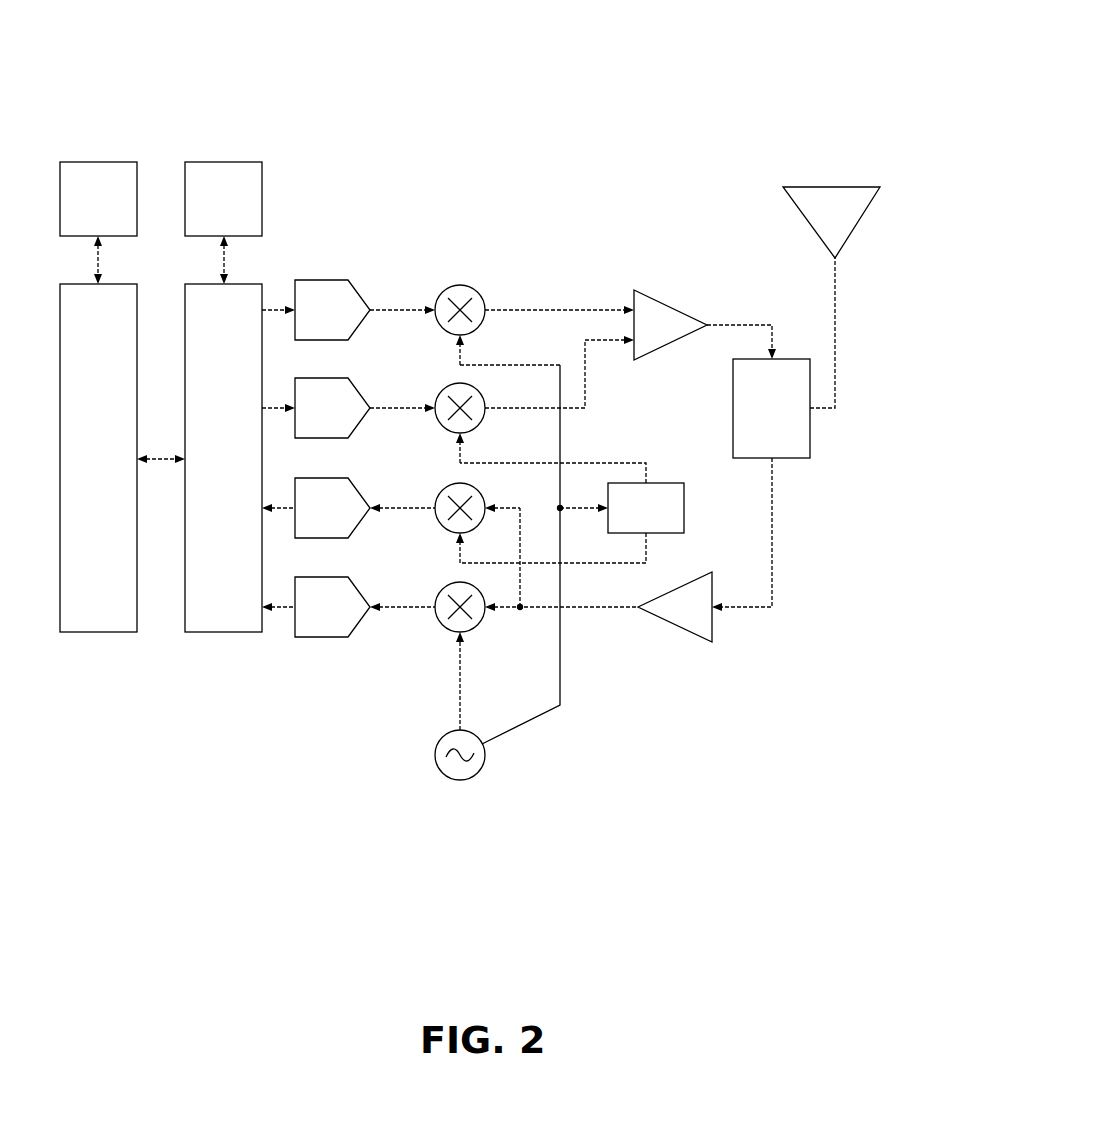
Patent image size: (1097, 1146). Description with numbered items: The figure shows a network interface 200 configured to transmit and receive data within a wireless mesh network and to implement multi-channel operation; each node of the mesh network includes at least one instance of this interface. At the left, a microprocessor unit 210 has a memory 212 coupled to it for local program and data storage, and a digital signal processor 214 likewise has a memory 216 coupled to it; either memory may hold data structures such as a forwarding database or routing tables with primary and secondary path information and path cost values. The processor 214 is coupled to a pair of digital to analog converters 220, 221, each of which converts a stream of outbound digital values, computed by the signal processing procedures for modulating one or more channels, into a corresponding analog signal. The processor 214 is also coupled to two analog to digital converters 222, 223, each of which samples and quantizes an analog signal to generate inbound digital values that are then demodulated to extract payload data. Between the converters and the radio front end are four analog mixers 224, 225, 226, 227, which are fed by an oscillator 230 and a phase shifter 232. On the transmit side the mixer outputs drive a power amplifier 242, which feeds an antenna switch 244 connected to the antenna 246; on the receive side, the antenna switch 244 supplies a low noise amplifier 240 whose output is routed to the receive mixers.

The network interface 200 is at (622, 110).
The microprocessor unit 210 is at (80, 476).
The memory 212 is at (80, 221).
The digital signal processor 214 is at (206, 476).
The memory 216 is at (206, 221).
The digital to analog converter 220 is at (304, 334).
The digital to analog converter 221 is at (304, 432).
The analog to digital converter 222 is at (304, 532).
The analog to digital converter 223 is at (304, 631).
The analog mixer 224 is at (446, 290).
The analog mixer 225 is at (446, 388).
The analog mixer 226 is at (446, 489).
The analog mixer 227 is at (446, 588).
The oscillator 230 is at (445, 738).
The phase shifter 232 is at (628, 519).
The low noise amplifier 240 is at (675, 625).
The power amplifier 242 is at (655, 292).
The antenna switch 244 is at (754, 419).
The antenna 246 is at (800, 214).